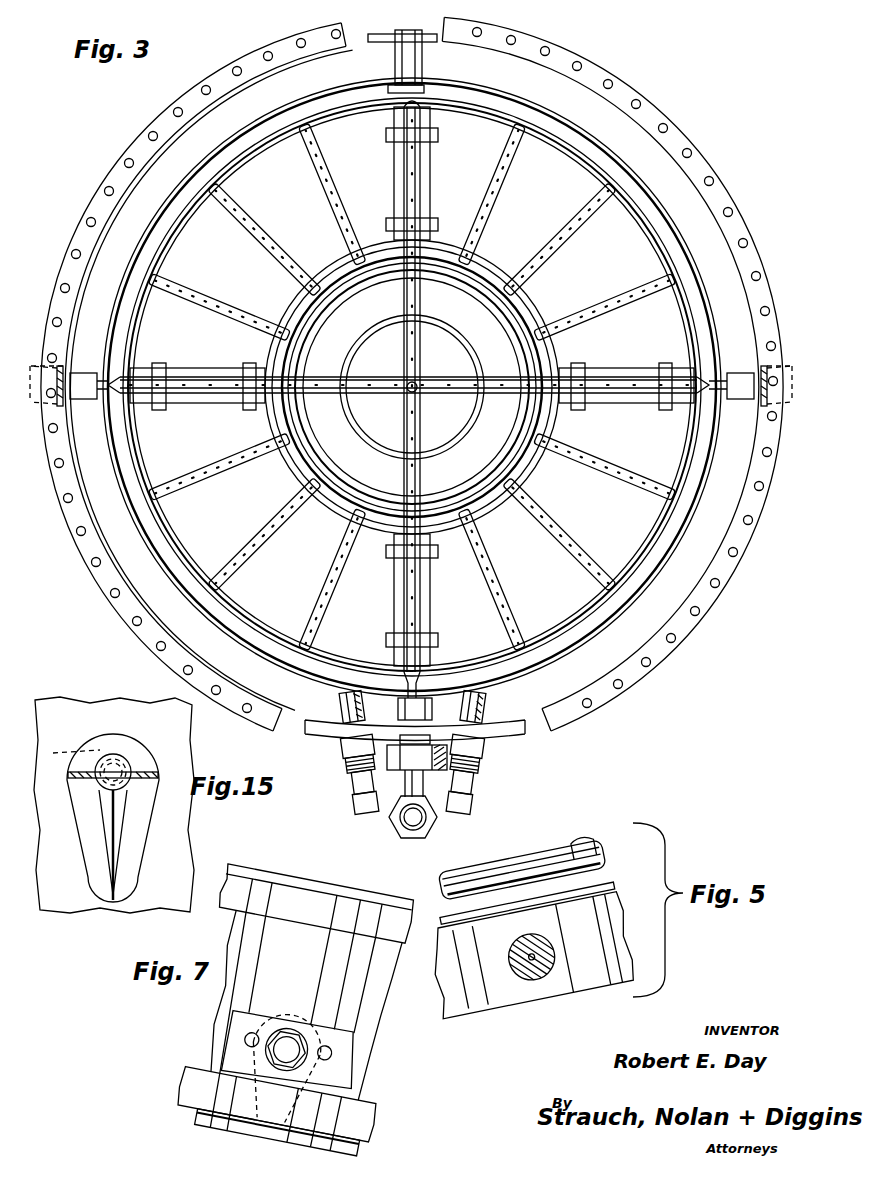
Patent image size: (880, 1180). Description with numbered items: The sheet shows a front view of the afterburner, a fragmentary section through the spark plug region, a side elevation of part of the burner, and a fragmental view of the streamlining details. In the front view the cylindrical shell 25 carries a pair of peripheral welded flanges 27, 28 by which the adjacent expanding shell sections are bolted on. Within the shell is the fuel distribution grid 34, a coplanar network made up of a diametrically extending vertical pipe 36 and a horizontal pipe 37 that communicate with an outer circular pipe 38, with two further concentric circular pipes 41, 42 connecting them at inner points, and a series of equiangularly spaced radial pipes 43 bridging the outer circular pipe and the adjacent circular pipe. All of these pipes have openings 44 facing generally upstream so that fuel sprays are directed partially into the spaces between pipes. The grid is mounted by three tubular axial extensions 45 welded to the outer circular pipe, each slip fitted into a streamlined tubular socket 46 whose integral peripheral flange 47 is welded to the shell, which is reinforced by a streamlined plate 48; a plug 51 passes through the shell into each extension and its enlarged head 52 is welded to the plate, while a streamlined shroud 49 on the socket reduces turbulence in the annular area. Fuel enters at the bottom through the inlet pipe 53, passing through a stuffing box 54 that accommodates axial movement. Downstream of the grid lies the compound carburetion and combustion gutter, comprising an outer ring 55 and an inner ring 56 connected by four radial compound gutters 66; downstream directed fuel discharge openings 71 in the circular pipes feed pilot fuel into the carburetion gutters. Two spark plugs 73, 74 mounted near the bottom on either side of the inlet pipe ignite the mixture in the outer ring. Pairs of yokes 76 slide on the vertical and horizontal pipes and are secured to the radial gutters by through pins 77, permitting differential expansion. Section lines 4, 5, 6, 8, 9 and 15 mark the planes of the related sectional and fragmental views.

In FIG. 3, the section line 4— 4 is at (420, 305).
In FIG. 3, the section line 5— 5 is at (523, 688).
In FIG. 5, the section line 6— 6 is at (417, 960).
In FIG. 3, the section line 8— 8 is at (365, 558).
In FIG. 3, the section line 9— 9 is at (487, 328).
In FIG. 3, the section line 15— 15 is at (778, 503).
In FIG. 3, the cylindrical shell 25 is at (172, 152).
In FIG. 15, the cylindrical shell 25 is at (78, 708).
In FIG. 7, the cylindrical shell 25 is at (277, 971).
In FIG. 3, the peripheral welded flange 27 is at (57, 274).
In FIG. 7, the peripheral welded flange 27 is at (286, 870).
In FIG. 7, the peripheral welded flange 28 is at (246, 1138).
In FIG. 3, the fuel distribution grid 34 is at (411, 386).
In FIG. 3, the vertical pipe 36 is at (400, 338).
In FIG. 3, the horizontal pipe 37 is at (424, 386).
In FIG. 3, the circular pipe 38 is at (192, 218).
In FIG. 5, the circular pipe 38 is at (545, 858).
In FIG. 3, the circular pipe 41 is at (400, 446).
In FIG. 3, the circular pipe 42 is at (332, 450).
In FIG. 3, the radial pipe 43 is at (278, 271).
In FIG. 3, the opening 44 is at (510, 192).
In FIG. 5, the opening 44 is at (483, 872).
In FIG. 3, the tubular axial extension 45 is at (436, 68).
In FIG. 15, the tubular axial extension 45 is at (130, 768).
In FIG. 3, the streamlined tubular socket 46 is at (394, 66).
In FIG. 15, the streamlined tubular socket 46 is at (53, 753).
In FIG. 3, the peripheral flange 47 is at (374, 58).
In FIG. 3, the streamlined plate 48 is at (426, 34).
In FIG. 15, the streamlined plate 48 is at (134, 848).
In FIG. 15, the streamlined shroud 49 is at (132, 822).
In FIG. 3, the plug 51 is at (422, 56).
In FIG. 15, the plug 51 is at (130, 790).
In FIG. 3, the enlarged head 52 is at (394, 38).
In FIG. 15, the enlarged head 52 is at (86, 798).
In FIG. 3, the inlet pipe 53 is at (426, 782).
In FIG. 3, the stuffing box 54 is at (398, 771).
In FIG. 3, the outer ring 55 is at (711, 473).
In FIG. 5, the outer ring 55 is at (583, 992).
In FIG. 3, the inner ring 56 is at (536, 468).
In FIG. 3, the radial compound gutter 66 is at (424, 160).
In FIG. 5, the fuel discharge opening 71 is at (570, 852).
In FIG. 3, the spark plug 73 is at (330, 776).
In FIG. 7, the spark plug 73 is at (320, 1028).
In FIG. 3, the spark plug 74 is at (510, 788).
In FIG. 5, the spark plug 74 is at (552, 948).
In FIG. 3, the yoke 76 is at (388, 138).
In FIG. 3, the through pin 77 is at (390, 226).